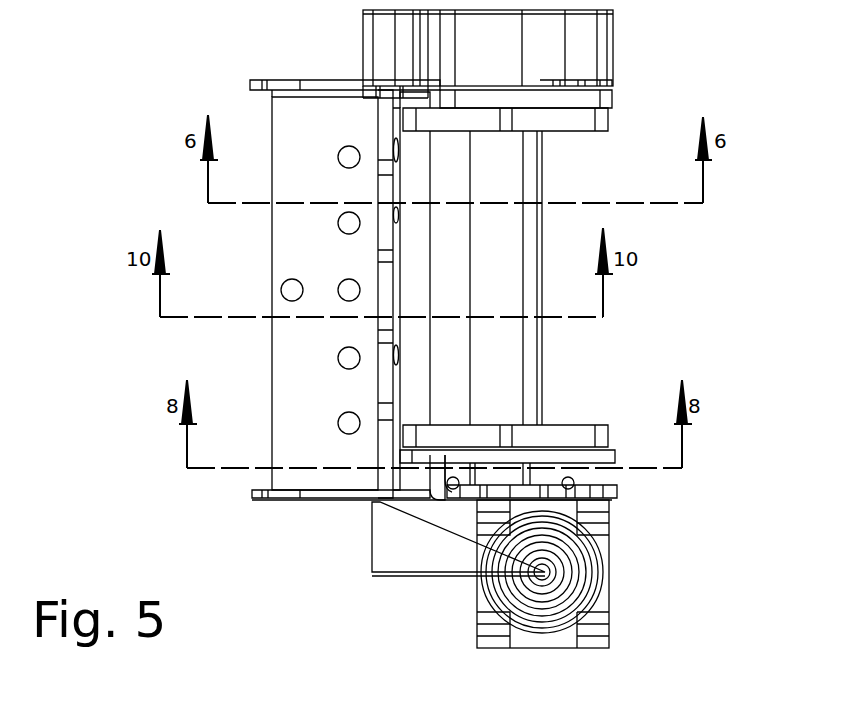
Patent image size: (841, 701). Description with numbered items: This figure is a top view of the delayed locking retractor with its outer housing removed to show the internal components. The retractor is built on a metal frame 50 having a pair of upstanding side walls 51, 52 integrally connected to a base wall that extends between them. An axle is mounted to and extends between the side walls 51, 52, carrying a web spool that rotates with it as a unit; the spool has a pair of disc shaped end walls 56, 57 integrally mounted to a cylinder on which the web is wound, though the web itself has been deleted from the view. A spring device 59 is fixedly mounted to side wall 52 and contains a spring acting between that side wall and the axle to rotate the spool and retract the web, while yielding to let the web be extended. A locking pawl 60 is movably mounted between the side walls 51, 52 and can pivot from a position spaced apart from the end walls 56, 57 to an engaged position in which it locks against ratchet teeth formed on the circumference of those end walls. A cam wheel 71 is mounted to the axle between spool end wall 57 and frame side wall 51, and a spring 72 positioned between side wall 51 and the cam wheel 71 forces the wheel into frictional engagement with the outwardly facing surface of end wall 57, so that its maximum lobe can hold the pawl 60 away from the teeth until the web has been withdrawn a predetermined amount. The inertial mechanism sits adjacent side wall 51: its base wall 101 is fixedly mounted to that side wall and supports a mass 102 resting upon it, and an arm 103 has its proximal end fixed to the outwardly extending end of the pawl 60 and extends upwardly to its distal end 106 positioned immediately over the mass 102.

The frame 50 is at (272, 113).
The side wall 51 is at (272, 500).
The side wall 52 is at (340, 80).
The spool end wall 56 is at (582, 132).
The spool end wall 57 is at (570, 425).
The spring device 59 is at (612, 52).
The locking pawl 60 is at (394, 290).
The cam wheel 71 is at (590, 450).
The spring 72 is at (580, 482).
The base wall 101 is at (609, 626).
The mass 102 is at (585, 592).
The arm 103 is at (425, 570).
The distal end 106 is at (552, 568).